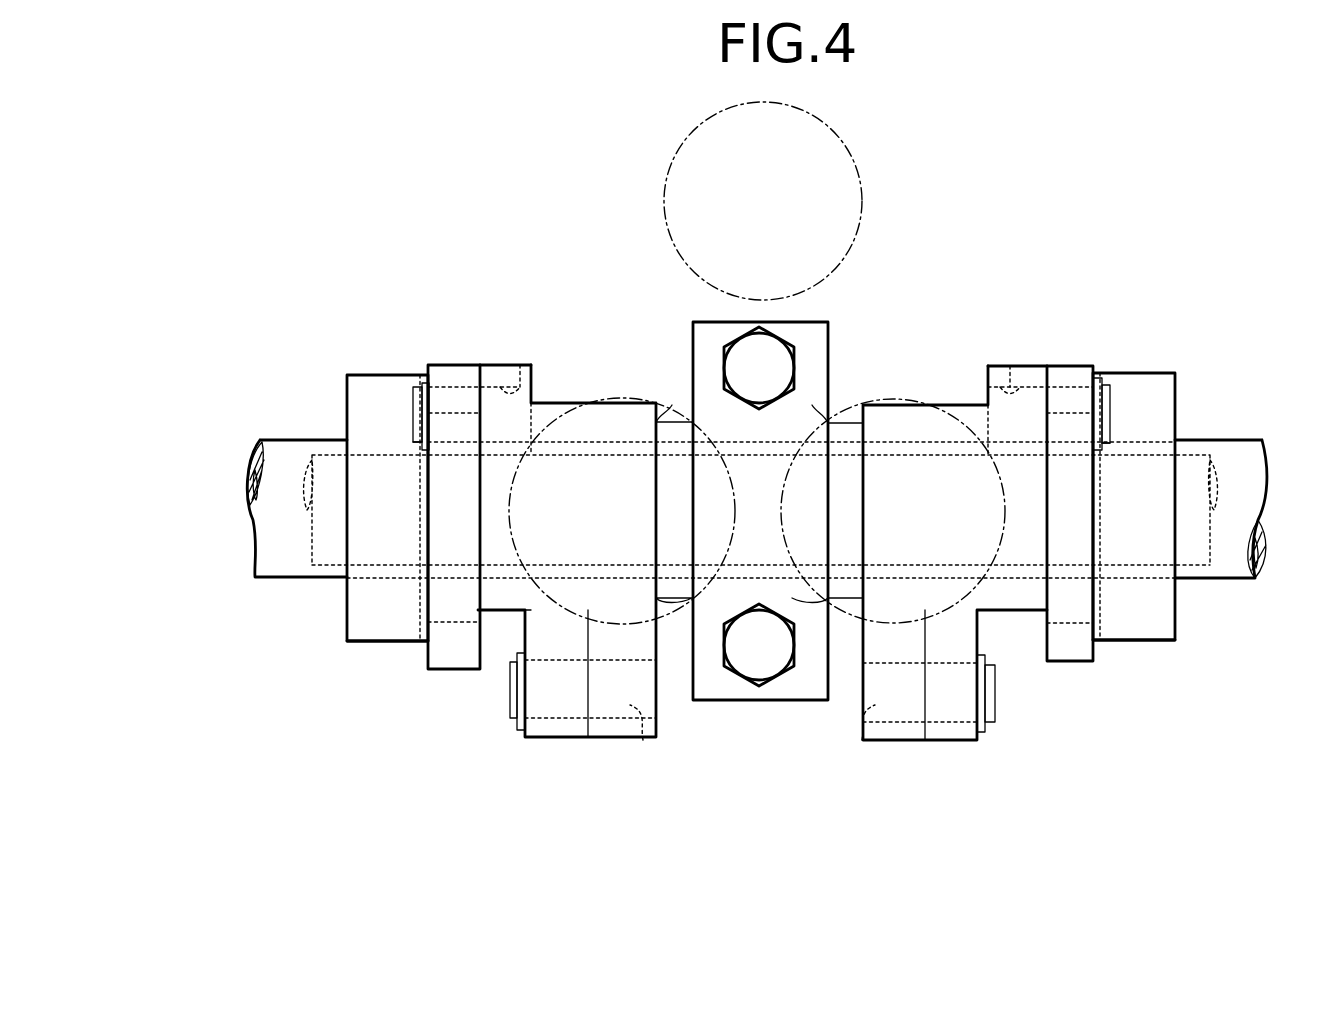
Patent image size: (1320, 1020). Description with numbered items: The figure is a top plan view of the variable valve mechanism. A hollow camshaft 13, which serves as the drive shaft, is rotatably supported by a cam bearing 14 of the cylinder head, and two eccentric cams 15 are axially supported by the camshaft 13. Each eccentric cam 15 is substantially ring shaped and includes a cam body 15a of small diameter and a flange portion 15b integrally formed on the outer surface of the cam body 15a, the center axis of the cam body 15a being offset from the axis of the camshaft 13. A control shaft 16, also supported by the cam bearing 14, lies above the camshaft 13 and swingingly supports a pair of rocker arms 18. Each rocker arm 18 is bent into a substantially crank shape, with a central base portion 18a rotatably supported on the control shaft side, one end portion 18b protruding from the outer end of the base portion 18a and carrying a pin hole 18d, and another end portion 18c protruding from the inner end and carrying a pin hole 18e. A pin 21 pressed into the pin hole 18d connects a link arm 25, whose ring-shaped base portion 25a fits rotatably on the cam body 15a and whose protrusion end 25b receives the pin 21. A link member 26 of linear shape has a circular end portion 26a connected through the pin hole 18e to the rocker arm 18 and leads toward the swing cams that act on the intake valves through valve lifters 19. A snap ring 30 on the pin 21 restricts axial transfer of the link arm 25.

The camshaft 13 is at (282, 440).
The cam bearing 14 is at (836, 360).
The eccentric cam 15 is at (357, 645).
The cam body 15a is at (433, 608).
The flange portion 15b is at (358, 612).
The control shaft 16 is at (312, 545).
The rocker arm 18 is at (568, 402).
The base portion 18a is at (497, 600).
The one end portion 18b is at (500, 365).
The other end portion 18c is at (610, 740).
The pin hole 18d is at (520, 388).
The pin hole 18e is at (643, 740).
The valve lifter 19 is at (688, 420).
The pin 21 is at (410, 413).
The link arm 25 is at (435, 673).
The base portion 25a is at (452, 652).
The protrusion end 25b is at (452, 373).
The link member 26 is at (567, 740).
The end portion 26a is at (530, 735).
The snap ring 30 is at (428, 376).